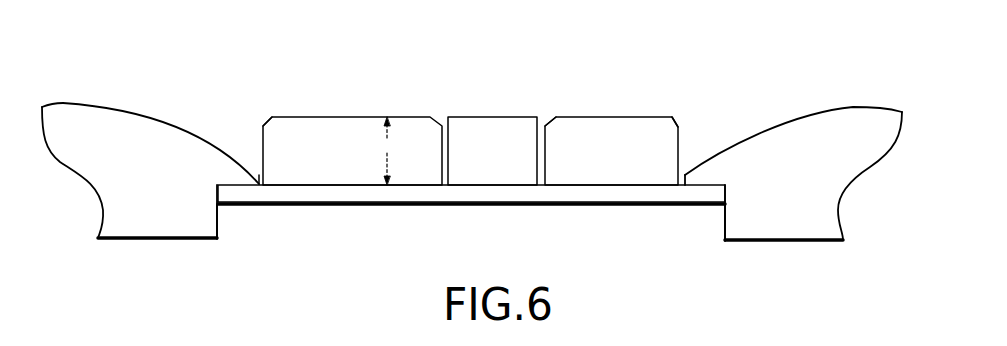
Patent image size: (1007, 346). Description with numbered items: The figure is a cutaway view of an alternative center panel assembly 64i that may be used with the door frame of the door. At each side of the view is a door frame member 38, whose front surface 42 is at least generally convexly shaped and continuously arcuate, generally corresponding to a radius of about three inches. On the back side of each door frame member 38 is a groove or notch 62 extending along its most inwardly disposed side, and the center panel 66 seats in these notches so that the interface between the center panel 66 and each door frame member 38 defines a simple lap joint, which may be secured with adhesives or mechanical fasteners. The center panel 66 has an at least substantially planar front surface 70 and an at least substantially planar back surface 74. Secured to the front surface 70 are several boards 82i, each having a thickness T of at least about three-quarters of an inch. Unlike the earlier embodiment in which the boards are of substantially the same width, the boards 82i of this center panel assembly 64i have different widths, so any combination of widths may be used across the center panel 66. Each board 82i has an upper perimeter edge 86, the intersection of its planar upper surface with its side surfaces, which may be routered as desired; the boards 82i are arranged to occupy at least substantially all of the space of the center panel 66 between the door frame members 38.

The door frame member 38 is at (87, 104).
The front surface 42 is at (143, 107).
The groove or notch 62 is at (218, 228).
The center panel 66 is at (295, 205).
The back surface 74 is at (540, 207).
The front surface 70 is at (259, 184).
The board 82i is at (309, 117).
The upper perimeter edge 86 is at (266, 118).
The center panel assembly 64i is at (588, 90).